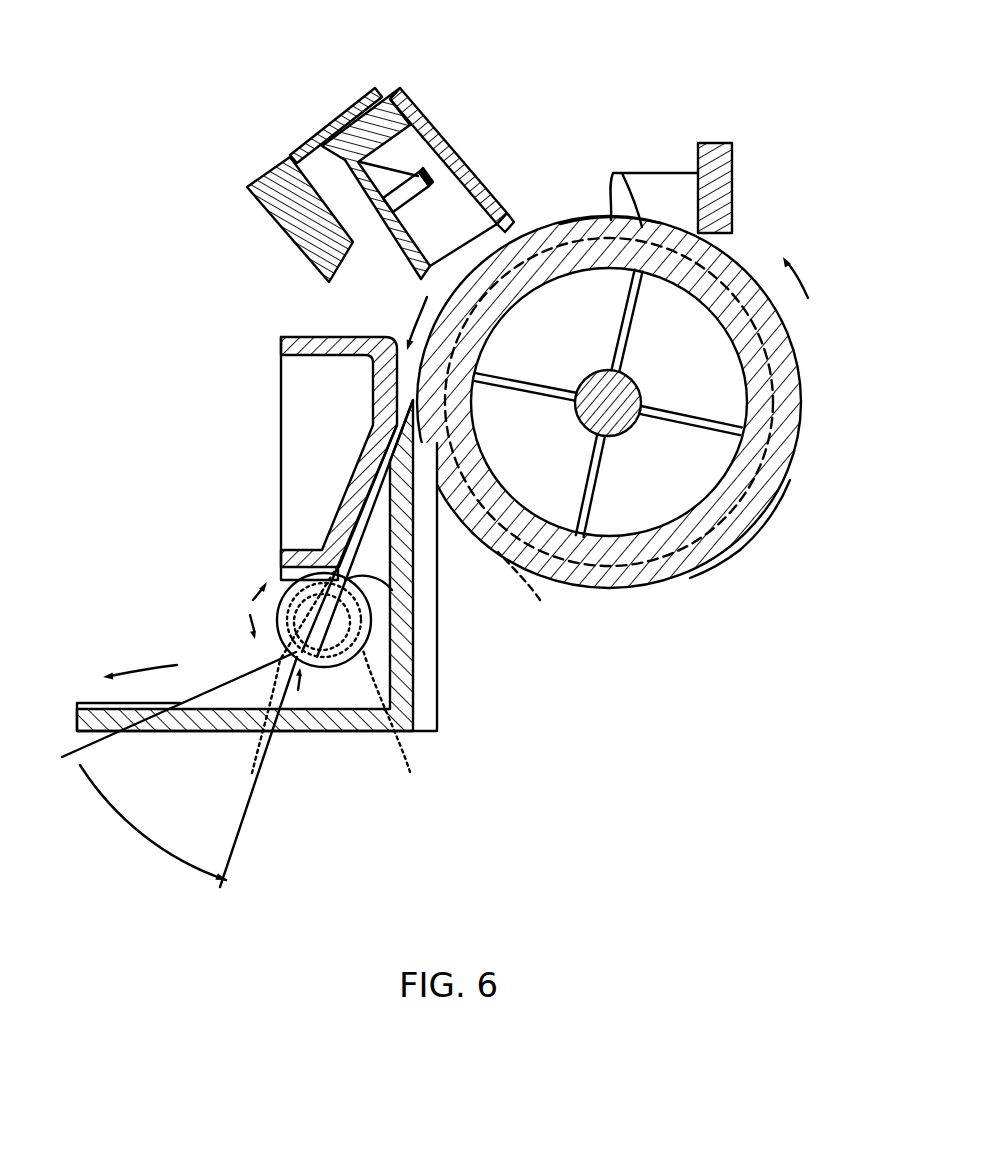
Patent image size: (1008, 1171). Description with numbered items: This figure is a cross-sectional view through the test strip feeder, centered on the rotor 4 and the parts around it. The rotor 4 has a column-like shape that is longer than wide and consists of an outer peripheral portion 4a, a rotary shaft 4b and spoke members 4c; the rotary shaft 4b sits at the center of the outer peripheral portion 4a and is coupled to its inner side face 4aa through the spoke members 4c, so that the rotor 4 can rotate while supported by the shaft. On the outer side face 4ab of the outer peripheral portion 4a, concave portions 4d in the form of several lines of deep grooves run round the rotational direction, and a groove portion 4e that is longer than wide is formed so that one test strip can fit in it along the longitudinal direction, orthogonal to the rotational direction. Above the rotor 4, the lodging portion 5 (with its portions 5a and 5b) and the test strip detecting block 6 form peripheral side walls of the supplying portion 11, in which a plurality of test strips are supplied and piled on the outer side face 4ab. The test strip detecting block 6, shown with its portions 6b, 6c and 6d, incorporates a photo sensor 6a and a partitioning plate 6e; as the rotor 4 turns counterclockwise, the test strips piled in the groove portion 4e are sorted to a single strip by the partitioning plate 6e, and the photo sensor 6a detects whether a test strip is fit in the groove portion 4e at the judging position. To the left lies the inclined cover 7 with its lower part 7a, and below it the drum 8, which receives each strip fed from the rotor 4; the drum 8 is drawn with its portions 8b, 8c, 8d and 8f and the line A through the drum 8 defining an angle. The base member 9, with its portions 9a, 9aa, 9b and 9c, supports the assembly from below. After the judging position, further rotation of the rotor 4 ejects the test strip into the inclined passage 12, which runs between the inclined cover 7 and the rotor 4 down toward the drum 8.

The rotor 4 is at (647, 412).
The outer peripheral portion 4a is at (797, 428).
The inner side face 4aa is at (514, 492).
The outer side face 4ab is at (720, 557).
The rotary shaft 4b is at (642, 383).
The spoke members 4c is at (510, 378).
The concave portions 4d is at (763, 505).
The groove portion 4e is at (612, 176).
The lodging portion 5 is at (709, 135).
The charging member holder 5a is at (732, 152).
The charging blade 5b is at (650, 187).
The test strip detecting block 6 is at (363, 144).
The photo sensor 6a is at (330, 123).
The blade holder 6b is at (290, 157).
The cover plate 6c is at (413, 106).
The seal pad 6d is at (285, 222).
The partitioning plate 6e is at (516, 232).
The inclined cover 7 is at (293, 458).
The container bottom 7a is at (273, 552).
The drum 8 is at (296, 680).
The roller support 8b is at (345, 580).
The roller axis line 8c is at (312, 660).
The roller 8d is at (281, 611).
The roller pad 8f is at (268, 642).
The base member 9 is at (317, 603).
The bracket side wall 9a is at (394, 556).
The bracket surface 9aa is at (535, 592).
The bracket bottom 9b is at (397, 728).
The bracket base line 9c is at (155, 727).
The supplying portion 11 is at (518, 122).
The inclined passage 12 is at (382, 490).
The axis A is at (286, 684).